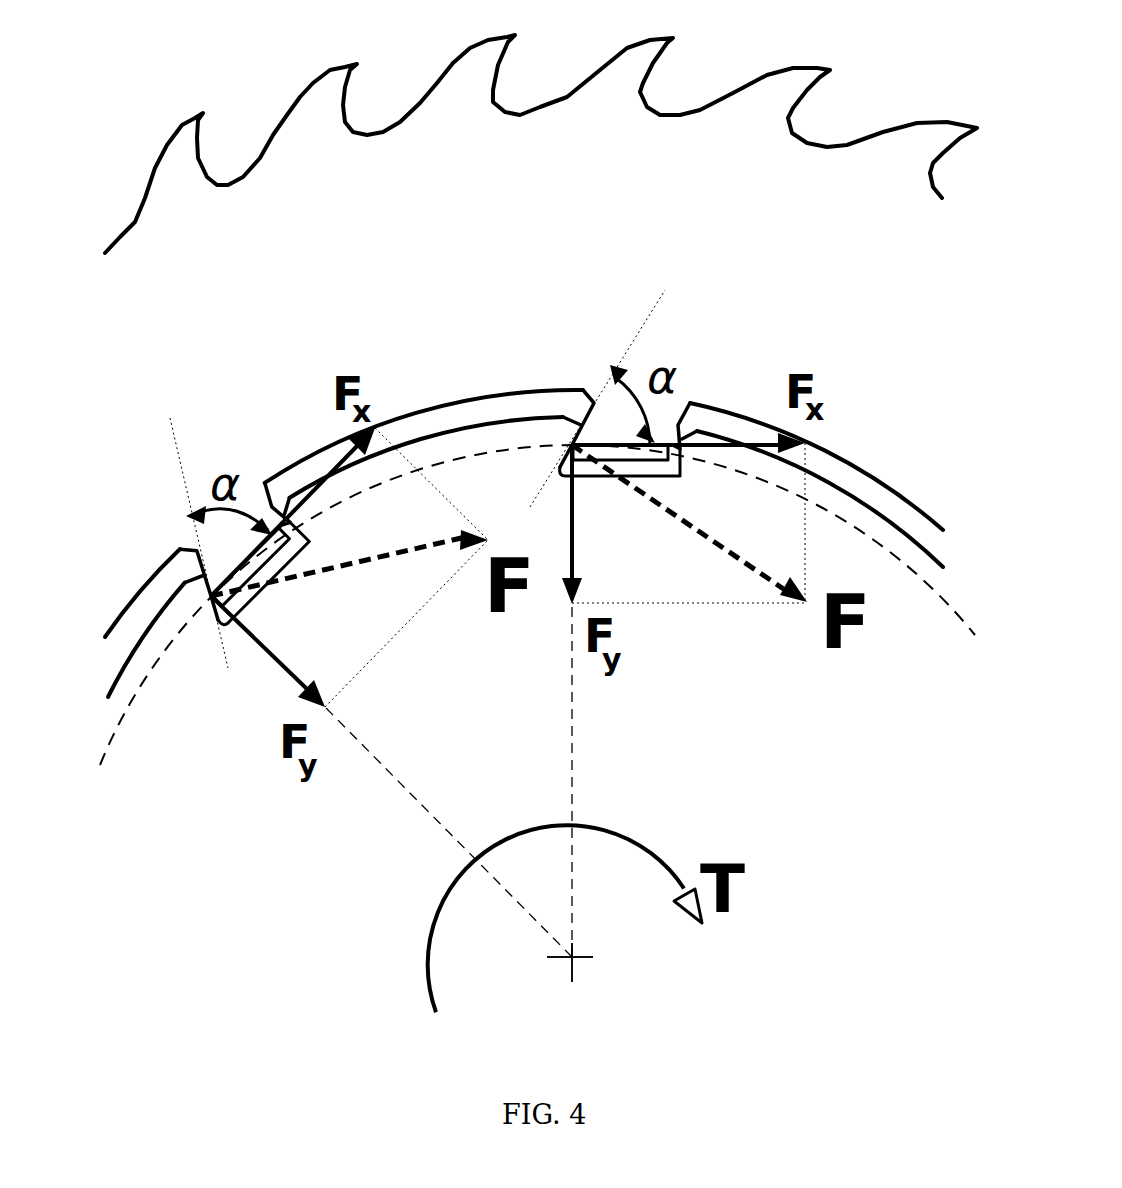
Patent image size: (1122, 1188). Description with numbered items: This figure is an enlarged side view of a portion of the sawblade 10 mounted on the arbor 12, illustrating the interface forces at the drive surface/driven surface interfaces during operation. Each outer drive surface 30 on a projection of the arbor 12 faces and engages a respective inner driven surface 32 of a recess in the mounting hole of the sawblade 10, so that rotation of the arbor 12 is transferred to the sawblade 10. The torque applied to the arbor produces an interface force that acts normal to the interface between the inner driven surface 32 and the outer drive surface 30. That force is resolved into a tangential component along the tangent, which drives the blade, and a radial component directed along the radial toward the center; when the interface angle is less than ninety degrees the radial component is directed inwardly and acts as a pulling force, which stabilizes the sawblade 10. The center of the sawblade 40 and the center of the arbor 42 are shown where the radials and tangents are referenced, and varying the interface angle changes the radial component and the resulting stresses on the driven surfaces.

The sawblade 10 is at (605, 290).
The arbor 12 is at (782, 737).
The outer drive surface 30 is at (222, 628).
The inner driven surface 32 is at (200, 571).
The center of the sawblade 40 is at (578, 957).
The center of the arbor 42 is at (611, 955).